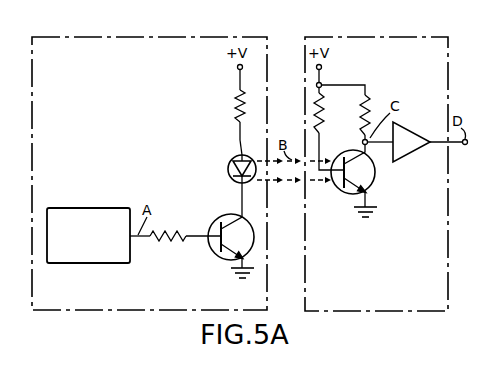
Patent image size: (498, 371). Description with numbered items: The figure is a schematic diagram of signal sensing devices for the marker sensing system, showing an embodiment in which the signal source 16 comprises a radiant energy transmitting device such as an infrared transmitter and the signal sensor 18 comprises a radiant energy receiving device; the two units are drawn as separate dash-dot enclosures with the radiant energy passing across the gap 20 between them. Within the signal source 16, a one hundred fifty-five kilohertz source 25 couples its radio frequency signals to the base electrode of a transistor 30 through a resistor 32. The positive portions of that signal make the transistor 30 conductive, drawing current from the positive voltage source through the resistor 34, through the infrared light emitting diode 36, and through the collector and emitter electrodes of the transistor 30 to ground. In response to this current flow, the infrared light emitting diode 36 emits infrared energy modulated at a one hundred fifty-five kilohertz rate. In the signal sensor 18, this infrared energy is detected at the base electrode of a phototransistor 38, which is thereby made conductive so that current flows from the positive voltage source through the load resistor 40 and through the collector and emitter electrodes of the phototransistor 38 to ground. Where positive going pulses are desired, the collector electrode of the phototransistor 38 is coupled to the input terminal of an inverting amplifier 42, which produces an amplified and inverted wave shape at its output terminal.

The signal source 16 is at (70, 36).
The signal sensor 18 is at (400, 37).
The optical coupling path 20 is at (283, 53).
The 155 KHZ source 25 is at (86, 208).
The transistor 30 is at (222, 216).
The resistor 32 is at (172, 243).
The resistor 34 is at (237, 102).
The infrared light emitting diode 36 is at (229, 165).
The phototransistor 38 is at (373, 183).
The load resistor 40 is at (371, 102).
The inverting amplifier 42 is at (418, 125).